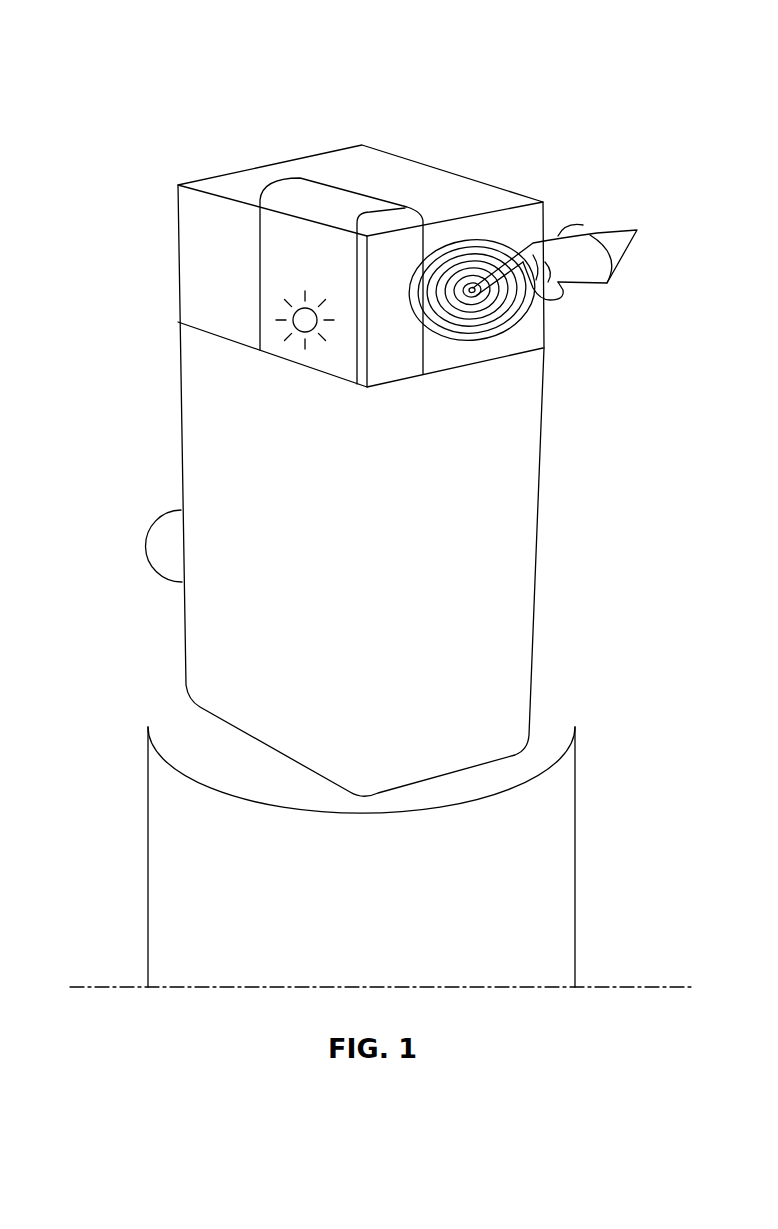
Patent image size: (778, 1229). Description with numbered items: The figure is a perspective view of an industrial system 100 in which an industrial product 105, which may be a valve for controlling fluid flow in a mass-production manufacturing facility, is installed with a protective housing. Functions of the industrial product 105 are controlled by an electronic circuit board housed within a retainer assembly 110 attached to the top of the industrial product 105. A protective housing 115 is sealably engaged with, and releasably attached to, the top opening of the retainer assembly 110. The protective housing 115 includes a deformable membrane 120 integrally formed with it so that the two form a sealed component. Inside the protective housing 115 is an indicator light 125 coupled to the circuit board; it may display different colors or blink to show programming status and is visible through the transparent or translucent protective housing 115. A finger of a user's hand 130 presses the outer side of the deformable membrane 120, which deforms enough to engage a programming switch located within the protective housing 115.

The industrial system 100 is at (128, 134).
The industrial product 105 is at (575, 833).
The retainer assembly 110 is at (537, 547).
The protective housing 115 is at (383, 148).
The deformable membrane 120 is at (530, 308).
The indicator light 125 is at (283, 336).
The user's hand 130 is at (558, 232).